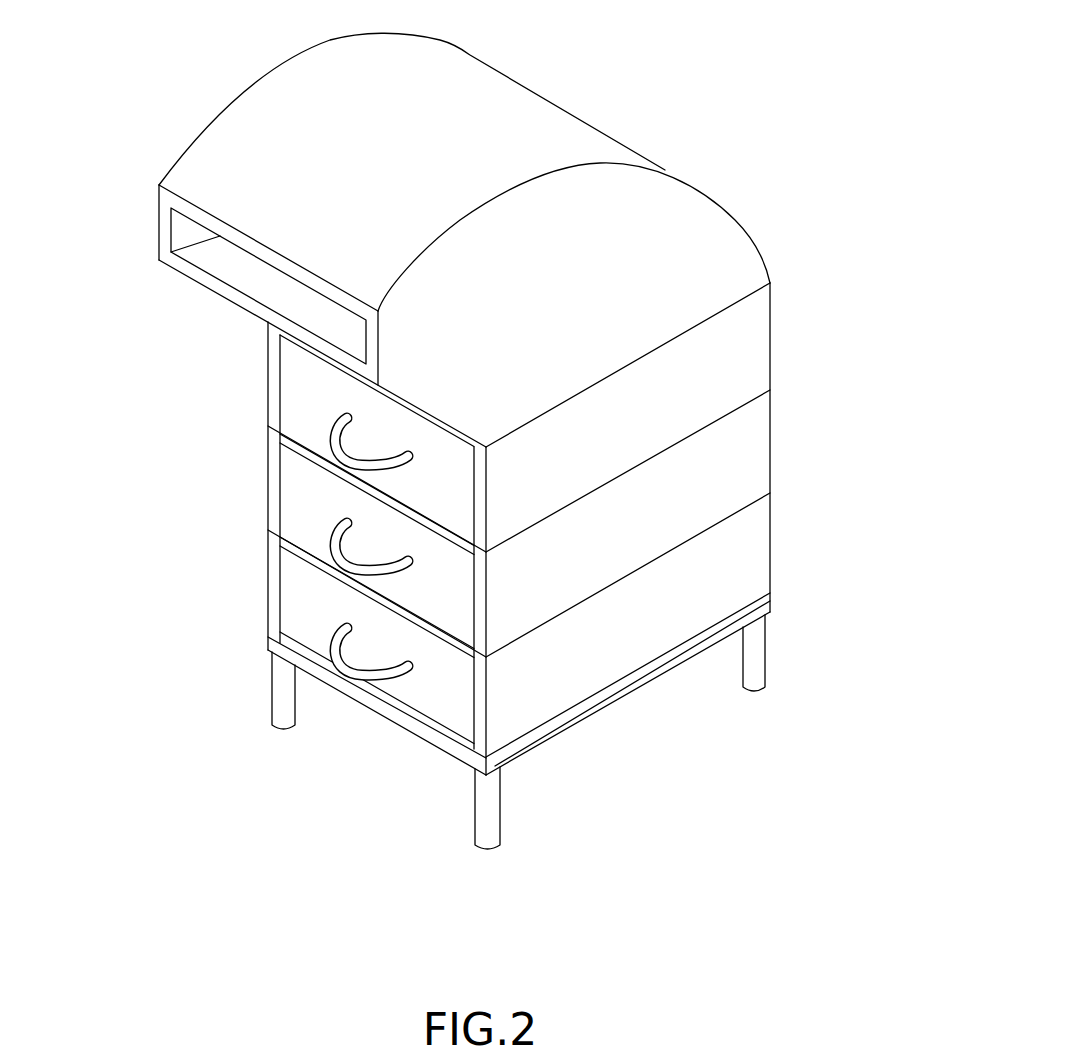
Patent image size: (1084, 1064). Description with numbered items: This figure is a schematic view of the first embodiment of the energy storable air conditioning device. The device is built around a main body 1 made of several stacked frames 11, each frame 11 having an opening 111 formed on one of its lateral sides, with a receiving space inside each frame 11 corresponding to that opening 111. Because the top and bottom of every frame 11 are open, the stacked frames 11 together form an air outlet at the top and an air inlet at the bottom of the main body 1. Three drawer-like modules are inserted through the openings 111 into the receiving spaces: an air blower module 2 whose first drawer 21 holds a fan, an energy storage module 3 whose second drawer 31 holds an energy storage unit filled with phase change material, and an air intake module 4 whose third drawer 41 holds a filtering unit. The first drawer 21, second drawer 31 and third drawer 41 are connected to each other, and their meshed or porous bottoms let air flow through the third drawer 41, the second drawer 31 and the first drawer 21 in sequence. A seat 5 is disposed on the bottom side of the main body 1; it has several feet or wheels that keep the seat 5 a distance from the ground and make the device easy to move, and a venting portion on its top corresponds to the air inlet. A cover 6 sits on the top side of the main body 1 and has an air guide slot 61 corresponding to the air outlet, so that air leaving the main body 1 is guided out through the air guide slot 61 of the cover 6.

The main body 1 is at (770, 350).
The frame 11 is at (740, 450).
The opening 111 is at (472, 692).
The air blower module 2 is at (287, 368).
The first drawer 21 is at (297, 410).
The energy storage module 3 is at (287, 472).
The second drawer 31 is at (297, 513).
The air intake module 4 is at (287, 577).
The third drawer 41 is at (297, 617).
The seat 5 is at (588, 718).
The cover 6 is at (233, 95).
The air guide slot 61 is at (225, 252).